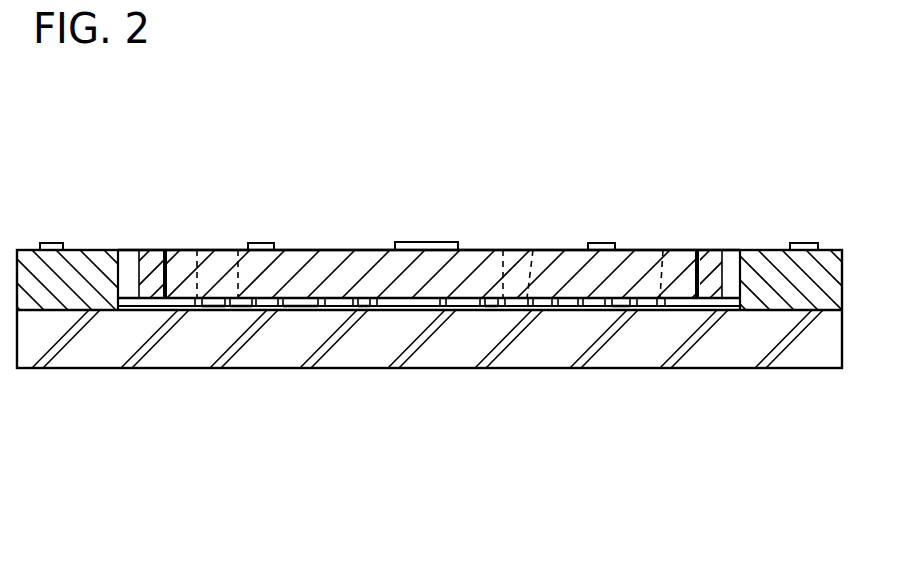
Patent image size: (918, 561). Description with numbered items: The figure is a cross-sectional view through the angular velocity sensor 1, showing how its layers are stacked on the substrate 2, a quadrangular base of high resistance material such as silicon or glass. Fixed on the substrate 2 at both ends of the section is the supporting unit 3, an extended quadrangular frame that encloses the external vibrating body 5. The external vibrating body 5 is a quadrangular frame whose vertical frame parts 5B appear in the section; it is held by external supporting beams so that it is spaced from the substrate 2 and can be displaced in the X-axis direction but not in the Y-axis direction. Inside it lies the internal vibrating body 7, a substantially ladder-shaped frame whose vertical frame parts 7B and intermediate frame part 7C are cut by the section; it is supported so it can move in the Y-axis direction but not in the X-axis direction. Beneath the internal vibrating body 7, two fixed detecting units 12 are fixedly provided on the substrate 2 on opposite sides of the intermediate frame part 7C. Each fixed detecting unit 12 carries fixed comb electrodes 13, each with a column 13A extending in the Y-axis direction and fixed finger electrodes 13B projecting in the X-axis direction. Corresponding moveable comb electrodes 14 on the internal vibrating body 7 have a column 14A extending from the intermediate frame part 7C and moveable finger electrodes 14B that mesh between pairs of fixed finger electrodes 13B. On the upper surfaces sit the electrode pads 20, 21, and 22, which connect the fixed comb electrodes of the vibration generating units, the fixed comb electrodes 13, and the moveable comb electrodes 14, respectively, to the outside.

The angular velocity sensor 1 is at (766, 234).
The substrate 2 is at (67, 357).
The supporting unit 3 is at (92, 250).
The external vibrating body 5 is at (140, 300).
The vertical frame part 5B is at (143, 250).
The internal vibrating body 7 is at (383, 250).
The vertical frame part 7B is at (175, 250).
The intermediate frame part 7C is at (470, 250).
The fixed detecting unit 12 is at (422, 310).
The fixed comb electrode 13 is at (250, 310).
The column 13A is at (227, 310).
The fixed finger electrode 13B is at (212, 310).
The moveable comb electrode 14 is at (197, 300).
The column 14A is at (282, 250).
The moveable finger electrode 14B is at (672, 204).
The electrode pad 20 is at (259, 243).
The electrode pad 21 is at (425, 242).
The electrode pad 22 is at (52, 243).